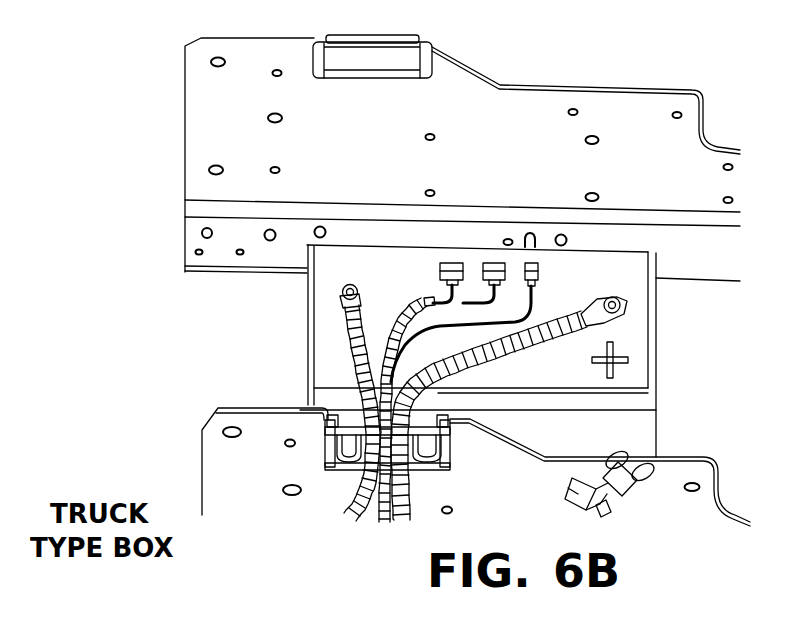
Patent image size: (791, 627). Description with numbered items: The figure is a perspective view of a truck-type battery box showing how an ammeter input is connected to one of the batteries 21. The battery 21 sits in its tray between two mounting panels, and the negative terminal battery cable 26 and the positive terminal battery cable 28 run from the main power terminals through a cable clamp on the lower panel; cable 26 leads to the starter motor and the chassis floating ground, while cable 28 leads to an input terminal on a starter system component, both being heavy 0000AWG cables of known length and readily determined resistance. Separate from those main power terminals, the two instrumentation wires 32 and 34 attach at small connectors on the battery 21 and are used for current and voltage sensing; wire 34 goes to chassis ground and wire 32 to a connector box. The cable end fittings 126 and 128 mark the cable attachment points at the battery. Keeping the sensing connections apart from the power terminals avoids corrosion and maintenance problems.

The battery 21 is at (657, 437).
The negative terminal battery cable 26 is at (355, 360).
The positive terminal battery cable 28 is at (560, 327).
The instrumentation wire 32 is at (533, 263).
The instrumentation wire 34 is at (449, 263).
The cable terminal 126 is at (340, 300).
The cable terminal 128 is at (620, 305).